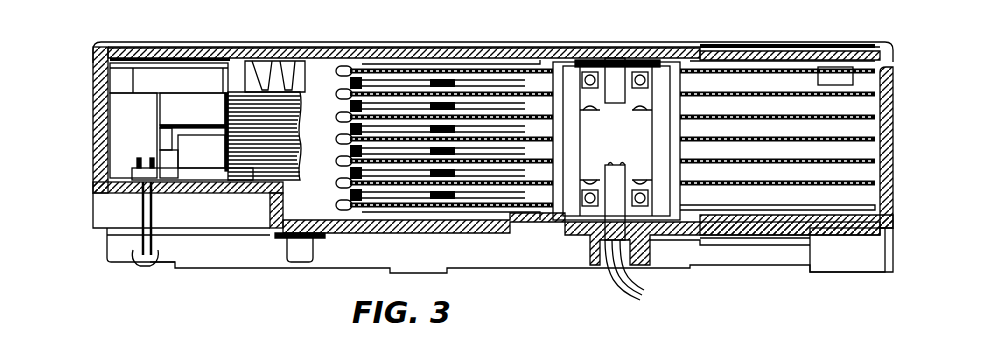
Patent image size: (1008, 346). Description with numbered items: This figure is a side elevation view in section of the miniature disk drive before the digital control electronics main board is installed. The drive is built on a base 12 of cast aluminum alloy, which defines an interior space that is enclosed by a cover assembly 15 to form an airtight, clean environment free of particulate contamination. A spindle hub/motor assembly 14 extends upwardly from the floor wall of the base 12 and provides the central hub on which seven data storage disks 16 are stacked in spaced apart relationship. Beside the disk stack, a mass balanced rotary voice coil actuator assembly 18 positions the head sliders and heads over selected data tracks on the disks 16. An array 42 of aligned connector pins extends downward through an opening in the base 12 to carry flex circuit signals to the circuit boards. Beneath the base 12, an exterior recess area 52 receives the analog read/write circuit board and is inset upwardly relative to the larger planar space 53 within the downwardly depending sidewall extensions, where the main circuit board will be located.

The base 12 is at (742, 262).
The spindle hub/motor assembly 14 is at (648, 100).
The cover assembly 15 is at (565, 45).
The data storage disks 16 is at (770, 90).
The rotary voice coil actuator assembly 18 is at (262, 50).
The array of aligned connector pins 42 is at (150, 258).
The exterior recess area 52 is at (107, 205).
The planar space 53 is at (215, 252).